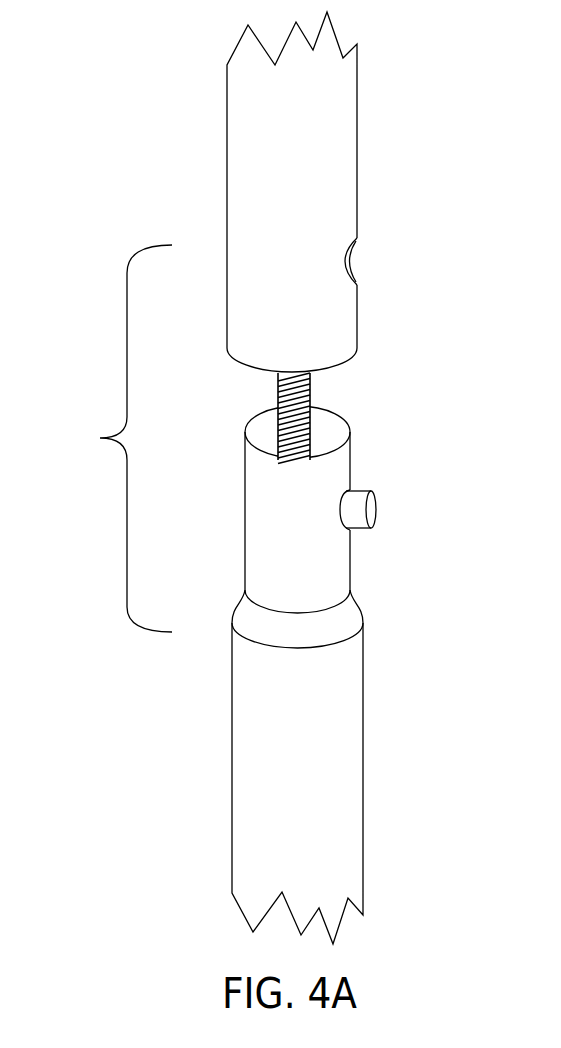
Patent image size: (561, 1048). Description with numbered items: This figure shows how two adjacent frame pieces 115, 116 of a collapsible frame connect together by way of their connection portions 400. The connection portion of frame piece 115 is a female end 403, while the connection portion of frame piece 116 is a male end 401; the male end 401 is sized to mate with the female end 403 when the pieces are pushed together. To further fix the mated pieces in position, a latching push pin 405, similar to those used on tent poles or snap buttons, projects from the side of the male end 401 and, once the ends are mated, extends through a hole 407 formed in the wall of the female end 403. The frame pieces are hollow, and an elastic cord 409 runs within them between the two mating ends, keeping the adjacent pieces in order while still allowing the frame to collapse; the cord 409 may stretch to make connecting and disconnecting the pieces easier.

The frame piece 115 is at (216, 96).
The frame piece 116 is at (220, 833).
The connection portions 400 is at (100, 438).
The male end 401 is at (231, 530).
The female end 403 is at (368, 356).
The latching push pin 405 is at (391, 509).
The hole 407 is at (370, 273).
The cord 409 is at (263, 393).